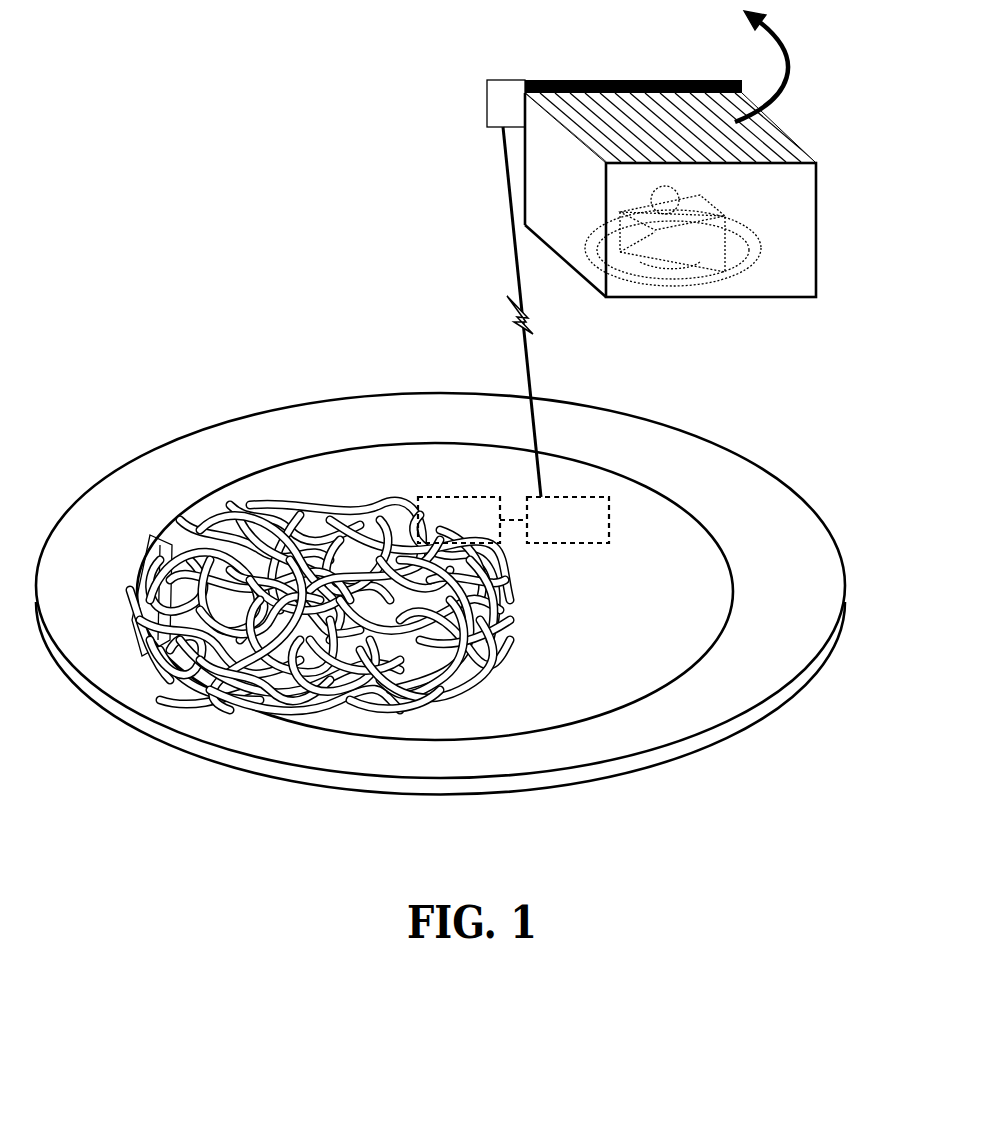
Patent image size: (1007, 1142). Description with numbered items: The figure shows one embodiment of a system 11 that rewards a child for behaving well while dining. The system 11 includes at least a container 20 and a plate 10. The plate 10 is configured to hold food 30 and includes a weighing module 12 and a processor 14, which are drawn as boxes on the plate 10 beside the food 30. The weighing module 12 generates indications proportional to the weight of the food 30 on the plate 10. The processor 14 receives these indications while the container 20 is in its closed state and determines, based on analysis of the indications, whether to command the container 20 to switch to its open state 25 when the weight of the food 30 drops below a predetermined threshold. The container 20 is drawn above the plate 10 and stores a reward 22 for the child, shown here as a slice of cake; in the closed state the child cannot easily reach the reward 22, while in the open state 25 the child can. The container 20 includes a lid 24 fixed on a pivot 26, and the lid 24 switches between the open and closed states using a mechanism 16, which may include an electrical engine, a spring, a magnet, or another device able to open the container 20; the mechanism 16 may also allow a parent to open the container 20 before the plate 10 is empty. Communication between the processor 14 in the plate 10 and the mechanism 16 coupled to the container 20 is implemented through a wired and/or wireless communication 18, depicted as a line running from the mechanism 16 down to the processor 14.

The plate 10 is at (222, 420).
The system 11 is at (241, 238).
The weighing module 12 is at (476, 536).
The processor 14 is at (585, 536).
The mechanism 16 is at (486, 96).
The wired and/or wireless communication 18 is at (508, 312).
The container 20 is at (783, 298).
The reward 22 is at (712, 228).
The lid 24 is at (770, 146).
The open state 25 is at (796, 52).
The pivot 26 is at (628, 80).
The food 30 is at (495, 635).